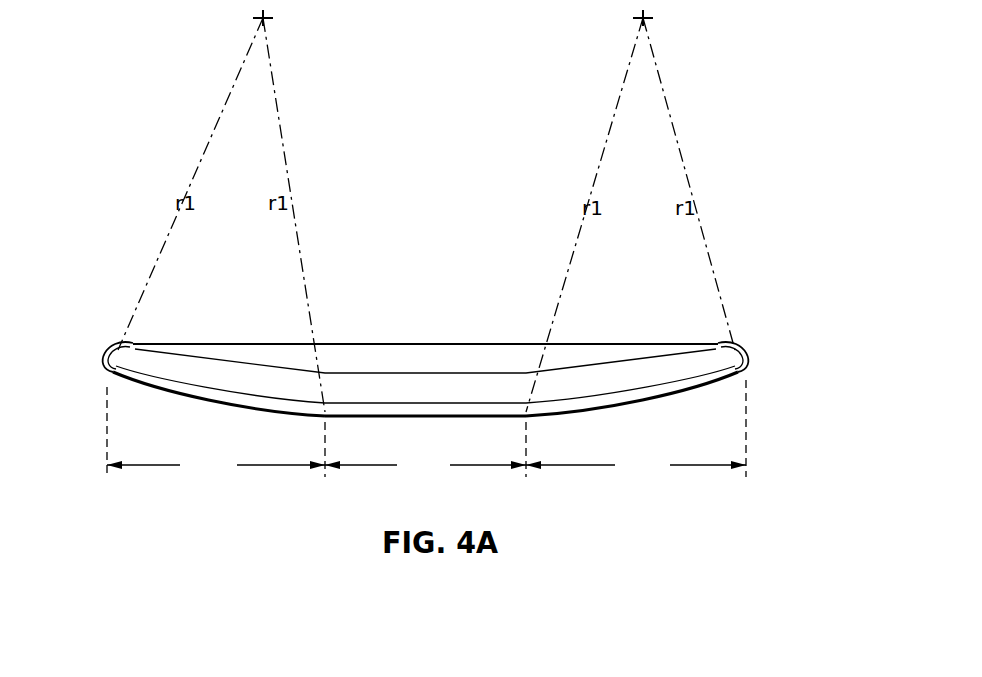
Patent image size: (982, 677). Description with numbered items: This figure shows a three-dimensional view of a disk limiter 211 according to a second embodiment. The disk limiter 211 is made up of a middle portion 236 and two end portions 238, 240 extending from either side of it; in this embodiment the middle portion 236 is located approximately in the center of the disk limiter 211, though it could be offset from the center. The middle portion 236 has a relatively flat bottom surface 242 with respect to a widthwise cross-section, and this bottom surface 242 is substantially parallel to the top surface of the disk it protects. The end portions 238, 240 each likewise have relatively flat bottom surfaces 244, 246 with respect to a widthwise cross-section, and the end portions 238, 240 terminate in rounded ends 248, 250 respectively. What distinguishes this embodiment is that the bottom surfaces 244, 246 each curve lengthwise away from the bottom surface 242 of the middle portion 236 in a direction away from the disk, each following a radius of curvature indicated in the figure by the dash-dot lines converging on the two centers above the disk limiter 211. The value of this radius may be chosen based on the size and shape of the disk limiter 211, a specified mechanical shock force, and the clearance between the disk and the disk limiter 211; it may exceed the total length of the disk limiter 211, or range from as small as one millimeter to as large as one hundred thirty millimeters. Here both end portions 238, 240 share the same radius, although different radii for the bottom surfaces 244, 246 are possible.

The disk limiter 211 is at (135, 300).
The middle portion 236 is at (425, 468).
The end portion 238 is at (216, 466).
The end portion 240 is at (636, 468).
The bottom surface 242 is at (423, 418).
The bottom surface 244 is at (200, 398).
The bottom surface 246 is at (648, 404).
The rounded end 248 is at (105, 358).
The rounded end 250 is at (748, 352).